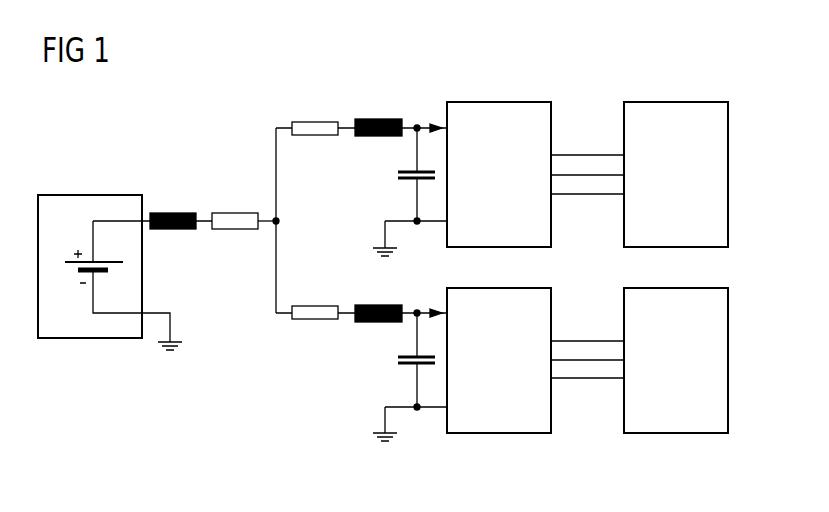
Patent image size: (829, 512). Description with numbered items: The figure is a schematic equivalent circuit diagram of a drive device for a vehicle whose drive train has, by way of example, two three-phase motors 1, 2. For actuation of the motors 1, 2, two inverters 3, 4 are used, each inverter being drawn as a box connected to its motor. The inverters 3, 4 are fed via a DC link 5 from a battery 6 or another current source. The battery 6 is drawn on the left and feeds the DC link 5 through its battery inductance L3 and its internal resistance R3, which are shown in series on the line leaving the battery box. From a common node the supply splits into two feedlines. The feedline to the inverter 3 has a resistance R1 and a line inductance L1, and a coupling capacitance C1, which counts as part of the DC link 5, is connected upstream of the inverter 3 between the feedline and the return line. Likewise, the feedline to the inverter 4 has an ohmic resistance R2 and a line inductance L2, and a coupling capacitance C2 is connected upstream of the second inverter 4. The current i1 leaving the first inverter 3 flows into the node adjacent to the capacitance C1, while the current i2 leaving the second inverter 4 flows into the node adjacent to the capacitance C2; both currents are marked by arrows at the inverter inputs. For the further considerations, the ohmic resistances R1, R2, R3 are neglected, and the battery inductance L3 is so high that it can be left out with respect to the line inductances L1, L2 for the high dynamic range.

The motor 1 is at (671, 101).
The motor 2 is at (660, 434).
The inverter 3 is at (510, 101).
The inverter 4 is at (498, 434).
The DC link 5 is at (361, 142).
The battery 6 is at (100, 339).
The resistance R1 is at (308, 121).
The ohmic resistance R2 is at (303, 305).
The internal resistance R3 is at (234, 211).
The line inductance L1 is at (376, 119).
The line inductance L2 is at (359, 305).
The battery inductance L3 is at (180, 211).
The coupling capacitance C1 is at (398, 181).
The coupling capacitance C2 is at (398, 365).
The current i1 is at (437, 125).
The current i2 is at (437, 310).